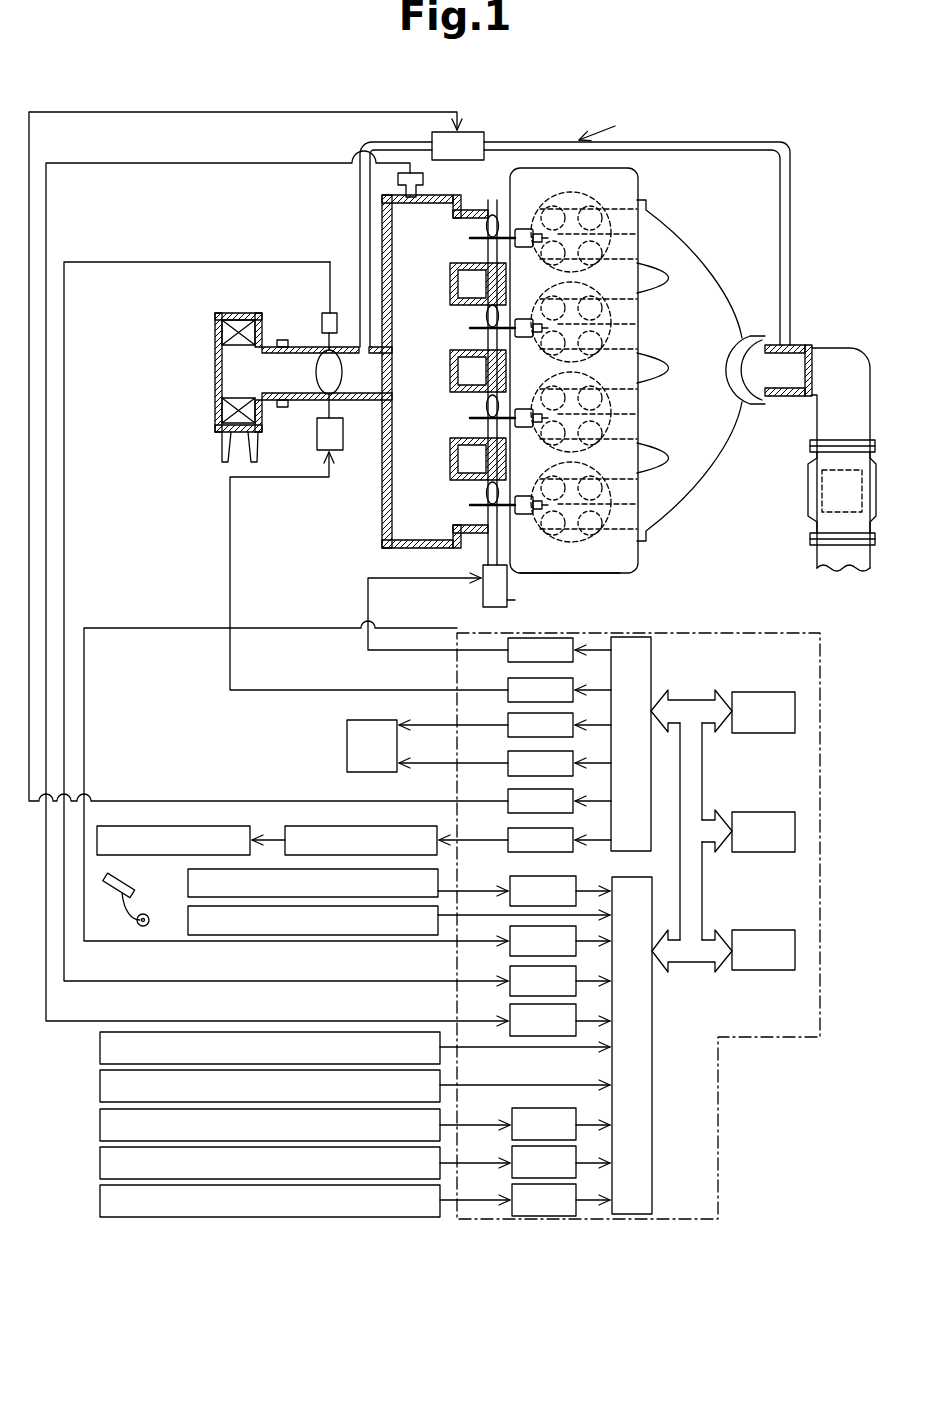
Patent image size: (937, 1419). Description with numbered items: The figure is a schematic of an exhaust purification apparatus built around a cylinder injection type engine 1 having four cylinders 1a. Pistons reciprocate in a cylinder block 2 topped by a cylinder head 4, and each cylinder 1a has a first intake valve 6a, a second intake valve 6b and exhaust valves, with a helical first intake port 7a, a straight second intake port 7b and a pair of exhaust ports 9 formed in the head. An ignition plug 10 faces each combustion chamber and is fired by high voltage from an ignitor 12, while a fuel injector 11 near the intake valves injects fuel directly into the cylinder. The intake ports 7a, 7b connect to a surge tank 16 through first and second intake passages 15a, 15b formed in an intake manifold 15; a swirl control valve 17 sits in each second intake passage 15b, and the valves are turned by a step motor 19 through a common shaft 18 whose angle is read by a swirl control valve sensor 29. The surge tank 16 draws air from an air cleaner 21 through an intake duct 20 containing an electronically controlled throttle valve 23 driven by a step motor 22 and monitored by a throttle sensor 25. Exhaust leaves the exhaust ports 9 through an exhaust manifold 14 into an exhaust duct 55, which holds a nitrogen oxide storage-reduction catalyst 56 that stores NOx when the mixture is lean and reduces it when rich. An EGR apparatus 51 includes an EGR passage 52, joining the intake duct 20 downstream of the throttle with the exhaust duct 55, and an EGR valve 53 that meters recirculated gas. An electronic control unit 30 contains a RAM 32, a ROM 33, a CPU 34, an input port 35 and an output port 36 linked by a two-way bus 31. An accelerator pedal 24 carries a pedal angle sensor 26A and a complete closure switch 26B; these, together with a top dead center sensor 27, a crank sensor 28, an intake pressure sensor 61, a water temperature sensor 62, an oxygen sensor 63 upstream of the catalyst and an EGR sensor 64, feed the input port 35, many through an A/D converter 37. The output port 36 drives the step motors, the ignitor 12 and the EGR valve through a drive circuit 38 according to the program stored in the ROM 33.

The cylinder injection type engine 1 is at (642, 172).
The cylinder 1a is at (598, 208).
The cylinder block 2 is at (600, 574).
The cylinder head 4 is at (600, 574).
The first intake valve 6a is at (580, 370).
The second intake valve 6b is at (640, 220).
The first intake port 7a is at (478, 284).
The second intake port 7b is at (588, 210).
The exhaust port 9 is at (640, 252).
The ignition plug 10 is at (220, 826).
The fuel injector 11 is at (522, 228).
The ignitor 12 is at (410, 822).
The exhaust manifold 14 is at (722, 425).
The intake manifold 15 is at (470, 210).
The first intake passage 15a is at (472, 240).
The second intake passage 15b is at (480, 226).
The surge tank 16 is at (360, 222).
The swirl control valve 17 is at (492, 200).
The common shaft 18 is at (450, 372).
The step motor 19 is at (483, 592).
The intake duct 20 is at (324, 345).
The air cleaner 21 is at (215, 435).
The step motor 22 is at (317, 436).
The throttle valve 23 is at (343, 372).
The accelerator pedal 24 is at (105, 898).
The throttle sensor 25 is at (330, 310).
The pedal angle sensor 26A is at (188, 884).
The complete closure switch 26B is at (188, 920).
The top dead center sensor 27 is at (100, 1048).
The crank sensor 28 is at (100, 1086).
The swirl control valve sensor 29 is at (507, 604).
The electronic control unit 30 is at (748, 628).
The two-way bus 31 is at (698, 688).
The RAM 32 is at (768, 692).
The ROM 33 is at (772, 812).
The CPU 34 is at (776, 930).
The input port 35 is at (652, 1086).
The output port 36 is at (651, 640).
The A/D converter 37 is at (512, 872).
The drive circuit 38 is at (498, 655).
The exhaust gas recirculation apparatus 51 is at (614, 127).
The EGR passage 52 is at (736, 141).
The EGR valve 53 is at (484, 140).
The exhaust duct 55 is at (862, 372).
The nitrogen oxide storage-reduction catalyst 56 is at (822, 488).
The intake pressure sensor 61 is at (398, 180).
The water temperature sensor 62 is at (100, 1125).
The oxygen sensor 63 is at (100, 1163).
The EGR sensor 64 is at (100, 1201).